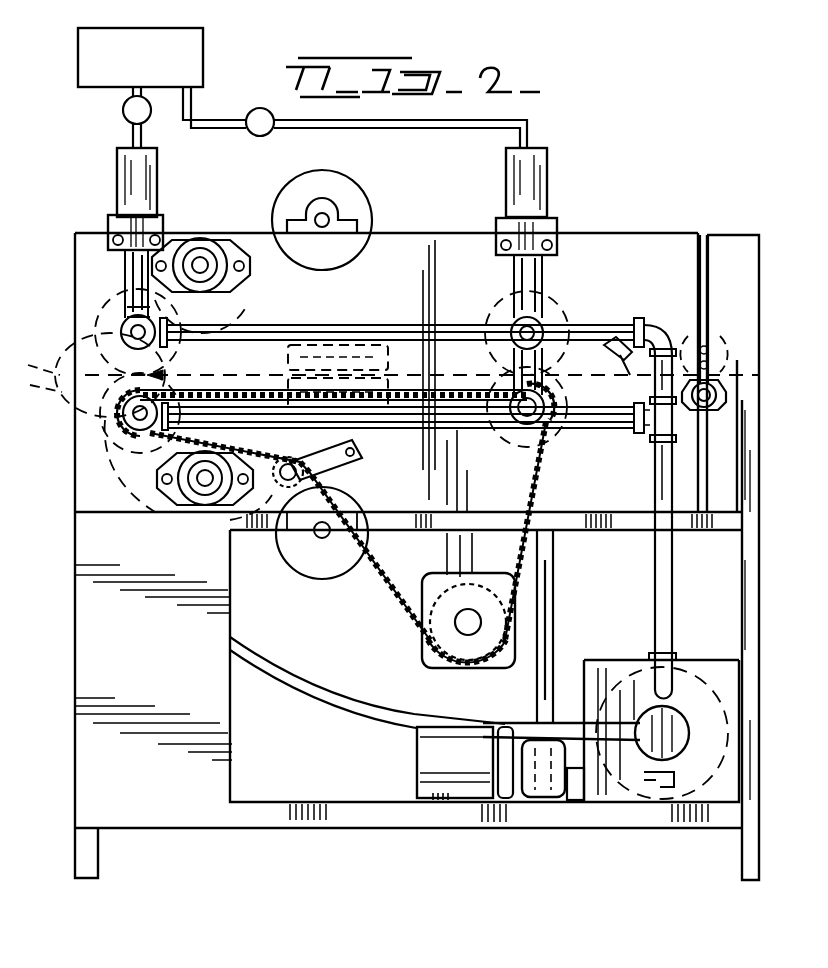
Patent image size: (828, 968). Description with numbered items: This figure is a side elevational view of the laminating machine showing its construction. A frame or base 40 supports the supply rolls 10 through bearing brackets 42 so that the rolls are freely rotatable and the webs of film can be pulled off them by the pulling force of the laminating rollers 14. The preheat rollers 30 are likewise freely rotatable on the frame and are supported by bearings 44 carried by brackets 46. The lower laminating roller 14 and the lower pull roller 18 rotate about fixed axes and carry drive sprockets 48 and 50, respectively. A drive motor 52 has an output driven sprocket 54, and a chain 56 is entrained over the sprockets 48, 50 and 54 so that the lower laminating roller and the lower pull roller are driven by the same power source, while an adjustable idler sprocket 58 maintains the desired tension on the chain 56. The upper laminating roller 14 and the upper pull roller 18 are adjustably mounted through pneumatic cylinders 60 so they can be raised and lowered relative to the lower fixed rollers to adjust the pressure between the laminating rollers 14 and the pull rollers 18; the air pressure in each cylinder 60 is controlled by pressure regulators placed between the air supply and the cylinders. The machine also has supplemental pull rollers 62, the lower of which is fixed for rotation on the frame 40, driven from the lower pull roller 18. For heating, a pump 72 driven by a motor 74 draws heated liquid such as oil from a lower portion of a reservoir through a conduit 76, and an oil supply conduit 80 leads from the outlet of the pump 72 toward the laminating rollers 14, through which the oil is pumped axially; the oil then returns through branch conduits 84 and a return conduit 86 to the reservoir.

The supply roll 10 is at (330, 182).
The laminating roller 14 is at (389, 375).
The pull roller 18 is at (560, 313).
The preheat roller 30 is at (197, 230).
The frame 40 is at (155, 790).
The bearing bracket 42 is at (303, 217).
The bearing 44 is at (197, 263).
The bracket 46 is at (232, 252).
The drive sprocket 48 is at (120, 427).
The drive sprocket 50 is at (546, 443).
The drive motor 52 is at (413, 660).
The output driven sprocket 54 is at (482, 638).
The chain 56 is at (405, 608).
The adjustable idler sprocket 58 is at (330, 472).
The pneumatic cylinder 60 is at (143, 175).
The supplemental pull roller 62 is at (733, 345).
The pump 72 is at (541, 793).
The motor 74 is at (442, 778).
The conduit 76 is at (577, 780).
The oil supply conduit 80 is at (547, 633).
The branch conduit 84 is at (427, 320).
The return conduit 86 is at (664, 582).